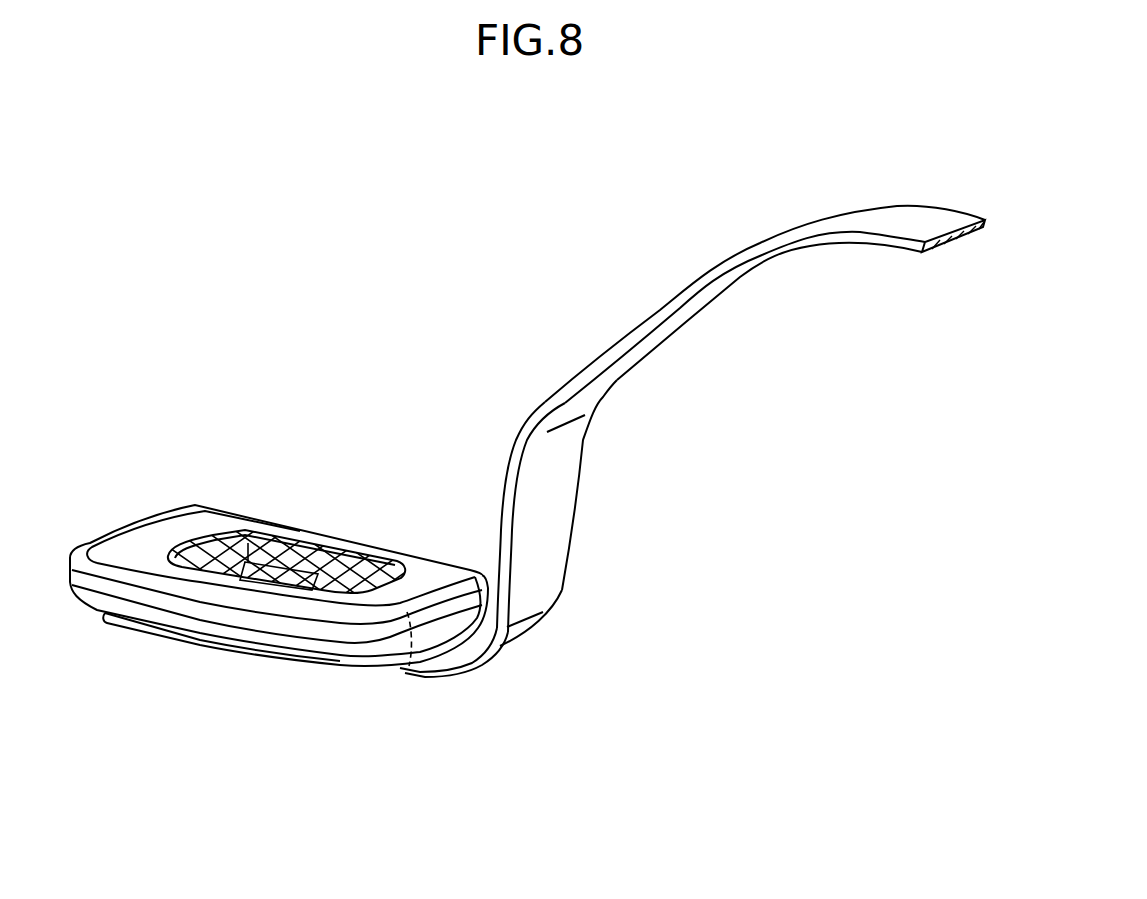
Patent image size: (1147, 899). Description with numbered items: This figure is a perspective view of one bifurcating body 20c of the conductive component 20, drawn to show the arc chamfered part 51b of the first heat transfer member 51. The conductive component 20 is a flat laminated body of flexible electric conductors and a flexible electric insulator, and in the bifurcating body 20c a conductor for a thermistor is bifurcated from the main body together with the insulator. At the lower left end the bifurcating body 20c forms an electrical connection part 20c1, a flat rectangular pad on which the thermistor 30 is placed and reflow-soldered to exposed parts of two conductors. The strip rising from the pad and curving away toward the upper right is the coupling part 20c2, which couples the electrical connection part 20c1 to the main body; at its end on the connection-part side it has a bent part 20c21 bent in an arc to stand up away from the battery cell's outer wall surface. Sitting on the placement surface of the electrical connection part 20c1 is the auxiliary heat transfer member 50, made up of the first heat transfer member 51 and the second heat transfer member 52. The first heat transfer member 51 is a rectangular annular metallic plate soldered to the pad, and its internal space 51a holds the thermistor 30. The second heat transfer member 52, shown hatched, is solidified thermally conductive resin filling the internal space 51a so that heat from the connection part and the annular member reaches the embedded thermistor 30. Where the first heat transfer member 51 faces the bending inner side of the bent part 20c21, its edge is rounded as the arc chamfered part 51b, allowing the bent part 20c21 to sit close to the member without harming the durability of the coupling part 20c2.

The conductive component 20 is at (544, 445).
The bifurcating body 20c is at (853, 181).
The electrical connection part 20c1 is at (252, 653).
The coupling part 20c2 is at (563, 490).
The bent part 20c21 is at (503, 643).
The thermistor 30 is at (283, 577).
The auxiliary heat transfer member 50 is at (233, 428).
The first heat transfer member 51 is at (185, 533).
The internal space 51a is at (345, 572).
The arc chamfered part 51b is at (433, 645).
The second heat transfer member 52 is at (240, 563).